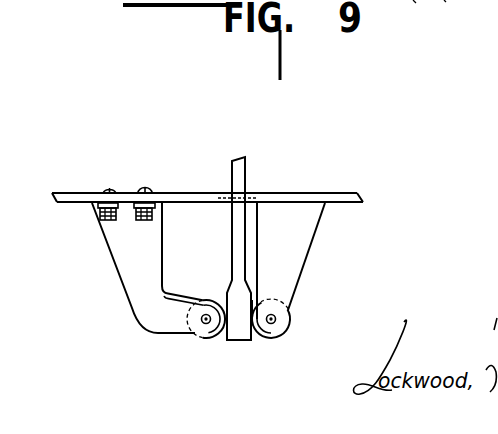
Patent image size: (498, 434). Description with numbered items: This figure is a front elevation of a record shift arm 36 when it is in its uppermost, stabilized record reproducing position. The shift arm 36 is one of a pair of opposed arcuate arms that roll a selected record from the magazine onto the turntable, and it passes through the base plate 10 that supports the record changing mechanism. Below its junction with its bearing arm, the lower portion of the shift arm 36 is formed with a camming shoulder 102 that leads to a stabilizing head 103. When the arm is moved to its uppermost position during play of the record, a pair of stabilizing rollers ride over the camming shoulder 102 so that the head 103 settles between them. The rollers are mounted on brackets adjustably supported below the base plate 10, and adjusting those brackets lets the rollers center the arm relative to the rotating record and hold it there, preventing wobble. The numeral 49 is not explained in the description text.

The base plate 10 is at (78, 200).
The shift arm 36 is at (238, 183).
The adjacent figure element 49 is at (429, 14).
The camming shoulder 102 is at (220, 275).
The stabilizing head 103 is at (240, 330).